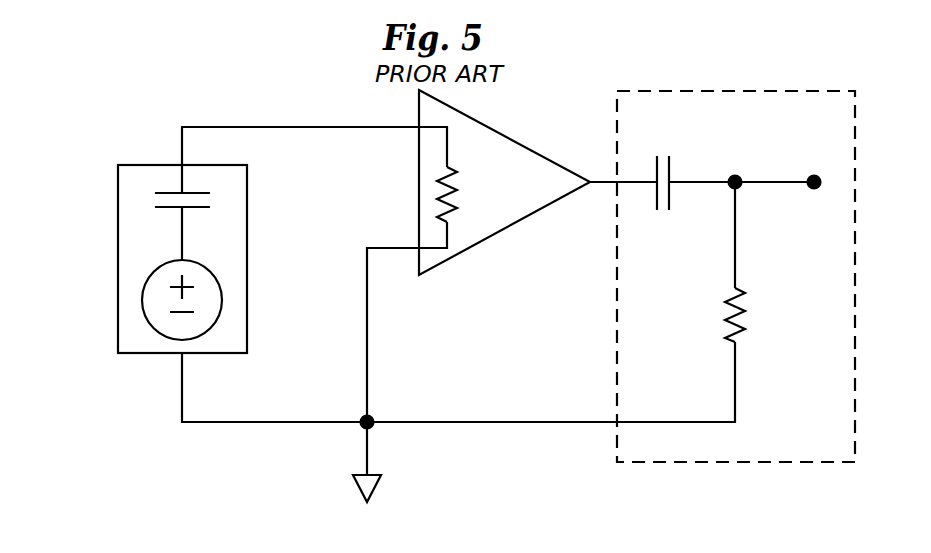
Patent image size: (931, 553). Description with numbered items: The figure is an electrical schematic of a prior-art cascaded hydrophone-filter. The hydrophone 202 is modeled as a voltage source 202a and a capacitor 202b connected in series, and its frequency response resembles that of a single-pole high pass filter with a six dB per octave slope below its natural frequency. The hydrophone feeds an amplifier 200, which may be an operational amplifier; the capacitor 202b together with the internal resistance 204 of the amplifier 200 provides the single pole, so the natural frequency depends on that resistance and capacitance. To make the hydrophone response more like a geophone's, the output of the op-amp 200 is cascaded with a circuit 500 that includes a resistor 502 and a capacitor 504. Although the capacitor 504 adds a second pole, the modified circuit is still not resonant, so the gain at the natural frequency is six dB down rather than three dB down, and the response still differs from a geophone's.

The amplifier 200 is at (527, 148).
The hydrophone 202 is at (131, 355).
The voltage source 202a is at (143, 292).
The capacitor 202b is at (165, 192).
The internal resistance 204 is at (446, 172).
The circuit 500 is at (617, 432).
The resistor 502 is at (747, 305).
The capacitor 504 is at (670, 168).